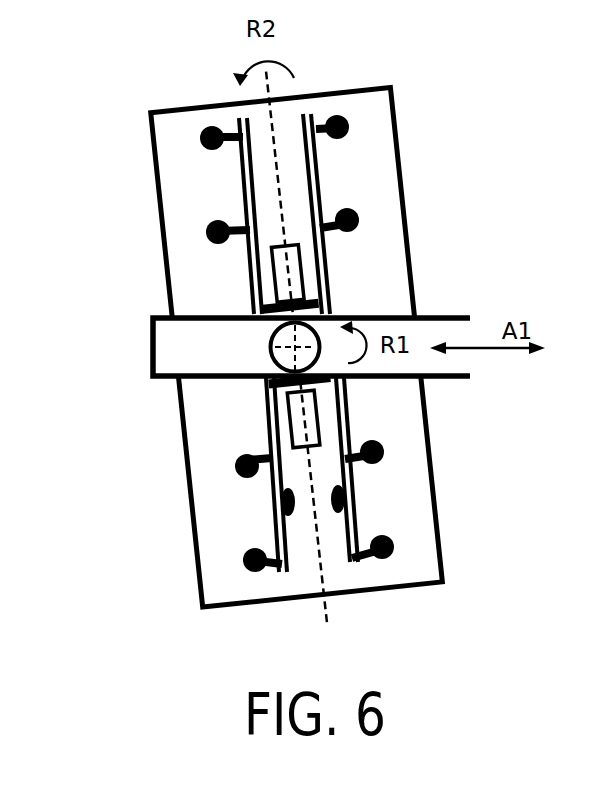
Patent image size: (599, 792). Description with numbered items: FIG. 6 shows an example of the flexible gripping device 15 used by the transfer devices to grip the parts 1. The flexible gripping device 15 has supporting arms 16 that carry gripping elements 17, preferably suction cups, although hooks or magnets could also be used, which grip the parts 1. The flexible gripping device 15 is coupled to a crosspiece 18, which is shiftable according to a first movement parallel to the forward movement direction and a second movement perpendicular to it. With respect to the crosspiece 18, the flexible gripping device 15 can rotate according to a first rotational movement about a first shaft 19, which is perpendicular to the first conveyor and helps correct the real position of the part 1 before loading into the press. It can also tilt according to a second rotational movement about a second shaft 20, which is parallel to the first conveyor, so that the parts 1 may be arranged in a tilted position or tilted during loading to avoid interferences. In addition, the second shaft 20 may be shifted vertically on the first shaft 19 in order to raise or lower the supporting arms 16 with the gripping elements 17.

The part 1 is at (176, 117).
The flexible gripping device 15 is at (258, 377).
The supporting arm 16 is at (240, 163).
The gripping element 17 is at (358, 222).
The crosspiece 18 is at (190, 367).
The first shaft 19 is at (272, 338).
The second shaft 20 is at (273, 275).